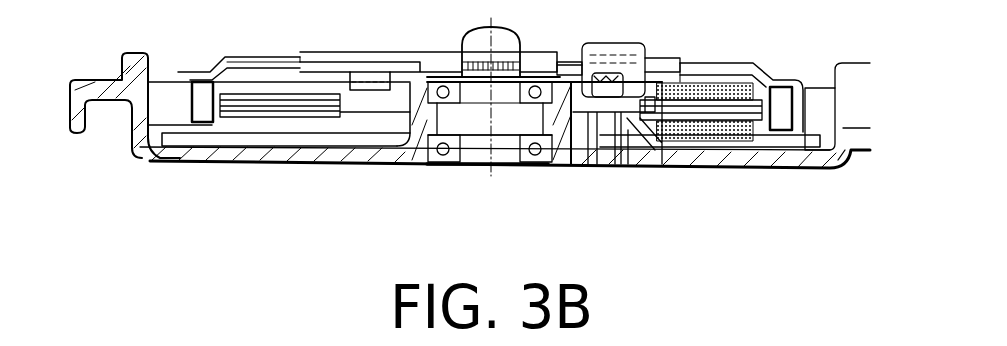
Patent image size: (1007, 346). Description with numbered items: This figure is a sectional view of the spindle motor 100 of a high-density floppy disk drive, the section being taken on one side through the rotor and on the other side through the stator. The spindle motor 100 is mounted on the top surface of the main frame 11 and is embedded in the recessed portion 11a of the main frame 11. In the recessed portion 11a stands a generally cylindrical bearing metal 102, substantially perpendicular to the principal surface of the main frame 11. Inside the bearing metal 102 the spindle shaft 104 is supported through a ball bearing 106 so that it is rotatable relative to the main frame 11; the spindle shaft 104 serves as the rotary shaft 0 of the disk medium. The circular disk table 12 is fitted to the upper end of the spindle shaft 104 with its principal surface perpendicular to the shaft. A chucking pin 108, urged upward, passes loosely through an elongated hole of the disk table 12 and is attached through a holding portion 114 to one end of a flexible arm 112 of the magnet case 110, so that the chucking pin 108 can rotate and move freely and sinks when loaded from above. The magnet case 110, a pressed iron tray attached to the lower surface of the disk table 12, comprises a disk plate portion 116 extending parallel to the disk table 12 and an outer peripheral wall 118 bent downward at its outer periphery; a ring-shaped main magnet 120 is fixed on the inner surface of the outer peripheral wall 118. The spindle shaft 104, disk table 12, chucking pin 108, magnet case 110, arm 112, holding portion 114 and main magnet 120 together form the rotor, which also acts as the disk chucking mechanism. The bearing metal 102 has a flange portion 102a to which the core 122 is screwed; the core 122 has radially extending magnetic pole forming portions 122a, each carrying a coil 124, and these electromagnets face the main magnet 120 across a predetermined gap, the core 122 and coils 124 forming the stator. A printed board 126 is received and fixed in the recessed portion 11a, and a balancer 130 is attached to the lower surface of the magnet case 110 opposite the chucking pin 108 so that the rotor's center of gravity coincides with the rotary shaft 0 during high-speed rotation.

The main frame 11 is at (857, 64).
The recessed portion 11a is at (820, 100).
The disk table 12 is at (340, 58).
The rotary shaft 0 is at (490, 163).
The spindle motor 100 is at (222, 48).
The bearing metal 102 is at (418, 120).
The flange portion 102a is at (632, 160).
The spindle shaft 104 is at (504, 38).
The ball bearing 106 is at (522, 168).
The chucking pin 108 is at (631, 44).
The magnet case 110 is at (718, 64).
The flexible arm 112 is at (586, 160).
The holding portion 114 is at (655, 160).
The disk plate portion 116 is at (245, 60).
The outer peripheral wall 118 is at (135, 147).
The main magnet 120 is at (210, 122).
The core 122 is at (343, 118).
The magnetic pole forming portion 122a is at (754, 152).
The coil 124 is at (705, 150).
The printed board 126 is at (276, 146).
The balancer 130 is at (376, 77).